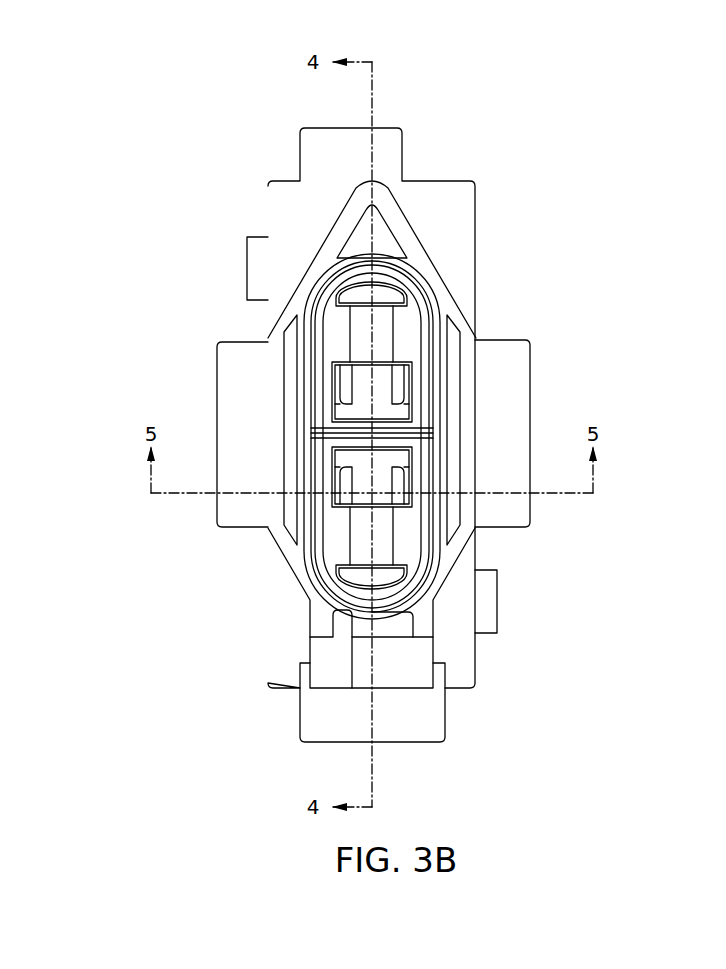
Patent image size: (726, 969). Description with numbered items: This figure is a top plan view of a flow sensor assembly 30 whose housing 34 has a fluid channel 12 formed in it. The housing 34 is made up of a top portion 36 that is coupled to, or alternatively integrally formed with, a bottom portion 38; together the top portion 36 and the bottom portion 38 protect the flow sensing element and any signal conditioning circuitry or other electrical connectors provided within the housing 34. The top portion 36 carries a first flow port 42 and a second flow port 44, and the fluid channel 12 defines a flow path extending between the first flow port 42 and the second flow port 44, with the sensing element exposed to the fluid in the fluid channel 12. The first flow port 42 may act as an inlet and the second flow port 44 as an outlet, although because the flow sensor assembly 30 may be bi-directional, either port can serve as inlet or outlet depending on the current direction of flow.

The flow sensor assembly 30 is at (117, 108).
The housing 34 is at (478, 179).
The top portion 36 is at (310, 616).
The bottom portion 38 is at (499, 598).
The first flow port 42 is at (382, 550).
The second flow port 44 is at (383, 327).
The fluid channel 12 is at (397, 412).